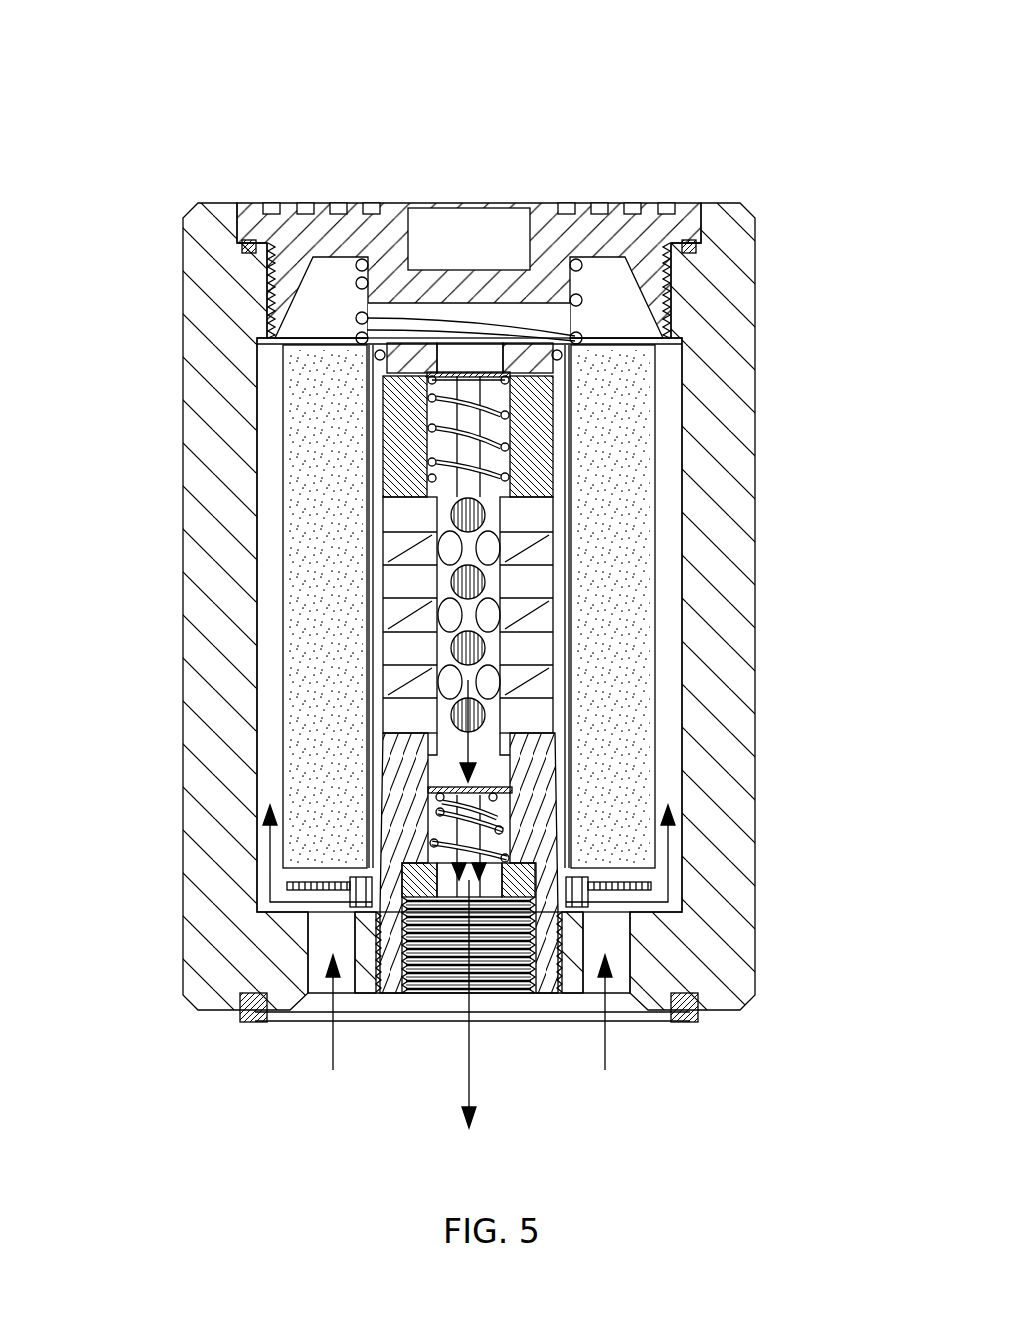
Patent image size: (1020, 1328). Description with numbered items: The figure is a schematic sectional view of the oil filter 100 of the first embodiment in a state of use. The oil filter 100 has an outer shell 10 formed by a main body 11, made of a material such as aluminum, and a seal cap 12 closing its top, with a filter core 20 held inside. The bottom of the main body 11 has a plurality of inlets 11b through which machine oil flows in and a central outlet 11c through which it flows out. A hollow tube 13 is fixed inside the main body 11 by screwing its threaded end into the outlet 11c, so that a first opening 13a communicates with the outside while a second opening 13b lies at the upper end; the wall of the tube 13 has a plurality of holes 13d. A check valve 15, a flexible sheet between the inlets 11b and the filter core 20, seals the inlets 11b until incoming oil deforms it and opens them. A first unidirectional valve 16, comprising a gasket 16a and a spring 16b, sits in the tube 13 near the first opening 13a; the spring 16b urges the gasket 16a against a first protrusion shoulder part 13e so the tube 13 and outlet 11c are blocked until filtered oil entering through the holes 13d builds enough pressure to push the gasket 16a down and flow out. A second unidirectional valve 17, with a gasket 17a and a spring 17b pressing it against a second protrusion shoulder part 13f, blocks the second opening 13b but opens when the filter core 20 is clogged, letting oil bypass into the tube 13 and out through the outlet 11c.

The oil filter 100 is at (463, 565).
The outer shell 10 is at (485, 597).
The main body 11 is at (484, 629).
The inlets 11b is at (325, 985).
The outlet 11c is at (416, 985).
The seal cap 12 is at (683, 230).
The tube 13 is at (463, 560).
The first opening 13a is at (480, 888).
The second opening 13b is at (468, 355).
The holes 13d is at (533, 517).
The first protrusion shoulder part 13e is at (508, 750).
The second protrusion shoulder part 13f is at (410, 362).
The check valve 15 is at (310, 902).
The first unidirectional valve 16 is at (647, 783).
The gasket 16a is at (493, 792).
The spring 16b is at (497, 818).
The second unidirectional valve 17 is at (306, 435).
The gasket 17a is at (440, 373).
The spring 17b is at (450, 402).
The filter core 20 is at (441, 625).